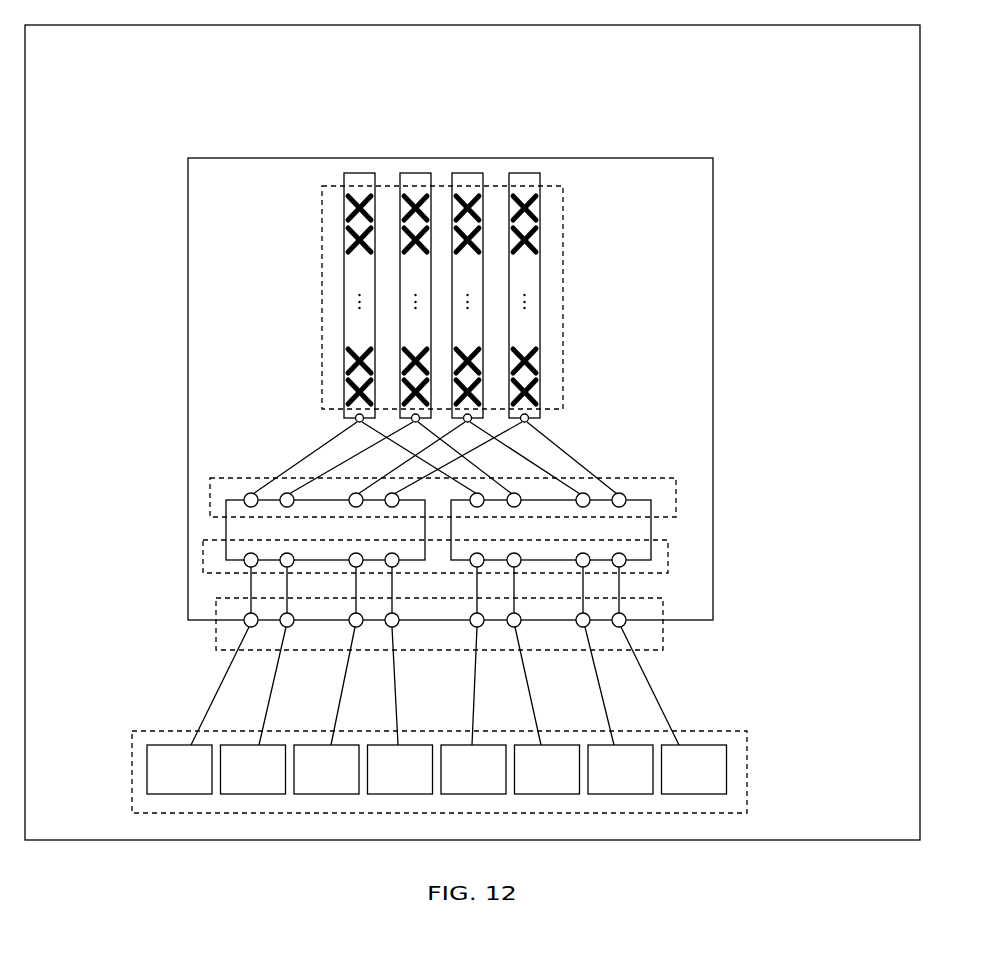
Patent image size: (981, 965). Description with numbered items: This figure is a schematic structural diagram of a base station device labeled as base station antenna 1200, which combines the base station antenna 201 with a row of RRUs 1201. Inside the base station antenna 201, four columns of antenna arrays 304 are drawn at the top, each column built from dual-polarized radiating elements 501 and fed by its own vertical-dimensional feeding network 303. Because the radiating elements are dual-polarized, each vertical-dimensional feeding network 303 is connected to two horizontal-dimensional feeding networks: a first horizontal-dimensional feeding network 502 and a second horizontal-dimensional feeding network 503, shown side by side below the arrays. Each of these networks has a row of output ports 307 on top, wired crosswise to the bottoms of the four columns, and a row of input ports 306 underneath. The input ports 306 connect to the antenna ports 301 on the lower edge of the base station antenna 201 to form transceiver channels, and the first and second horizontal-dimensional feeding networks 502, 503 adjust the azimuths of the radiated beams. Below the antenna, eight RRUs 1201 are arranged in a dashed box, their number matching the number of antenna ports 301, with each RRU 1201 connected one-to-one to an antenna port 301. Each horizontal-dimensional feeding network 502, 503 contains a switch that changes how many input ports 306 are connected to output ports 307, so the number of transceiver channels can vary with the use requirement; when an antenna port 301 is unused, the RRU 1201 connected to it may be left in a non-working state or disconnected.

The base station antenna 1200 is at (298, 72).
The base station antenna 201 is at (638, 158).
The vertical-dimensional feeding network 303 is at (518, 173).
The antenna array 304 is at (563, 207).
The dual-polarized radiating element 501 is at (563, 247).
The first horizontal-dimensional feeding network 502 is at (226, 525).
The second horizontal-dimensional feeding network 503 is at (651, 530).
The output port 307 is at (676, 490).
The input port 306 is at (203, 552).
The antenna port 301 is at (663, 610).
The RRU 1201 is at (747, 733).